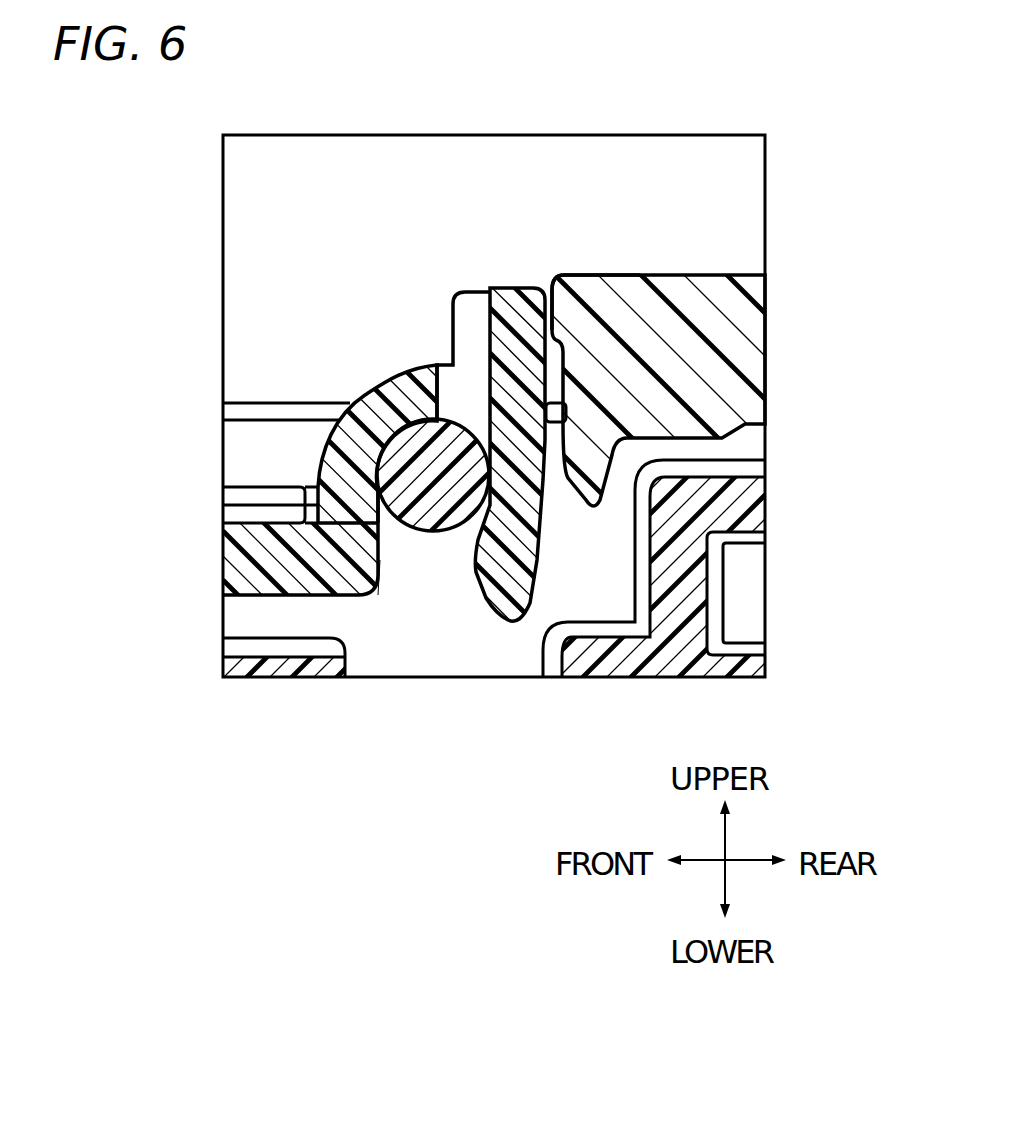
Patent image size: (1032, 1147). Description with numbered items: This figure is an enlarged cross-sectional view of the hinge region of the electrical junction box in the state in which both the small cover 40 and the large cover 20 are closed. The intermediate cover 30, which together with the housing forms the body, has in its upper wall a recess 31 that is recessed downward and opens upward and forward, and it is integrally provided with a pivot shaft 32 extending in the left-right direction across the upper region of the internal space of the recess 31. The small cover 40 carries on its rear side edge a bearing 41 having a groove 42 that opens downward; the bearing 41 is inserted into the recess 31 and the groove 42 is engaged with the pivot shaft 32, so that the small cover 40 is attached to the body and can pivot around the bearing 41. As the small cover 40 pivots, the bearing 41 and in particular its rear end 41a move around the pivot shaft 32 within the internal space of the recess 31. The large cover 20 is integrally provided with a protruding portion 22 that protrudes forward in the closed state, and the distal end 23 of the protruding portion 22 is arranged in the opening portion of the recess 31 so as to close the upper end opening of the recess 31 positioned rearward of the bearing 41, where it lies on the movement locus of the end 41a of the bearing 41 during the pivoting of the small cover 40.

The large cover 20 is at (772, 315).
The protruding portion 22 is at (697, 307).
The distal end 23 is at (595, 322).
The intermediate cover 30 is at (747, 463).
The recess 31 is at (570, 560).
The pivot shaft 32 is at (427, 457).
The small cover 40 is at (256, 510).
The bearing 41 is at (377, 400).
The rear end of the bearing 41a is at (522, 317).
The groove 42 is at (382, 558).